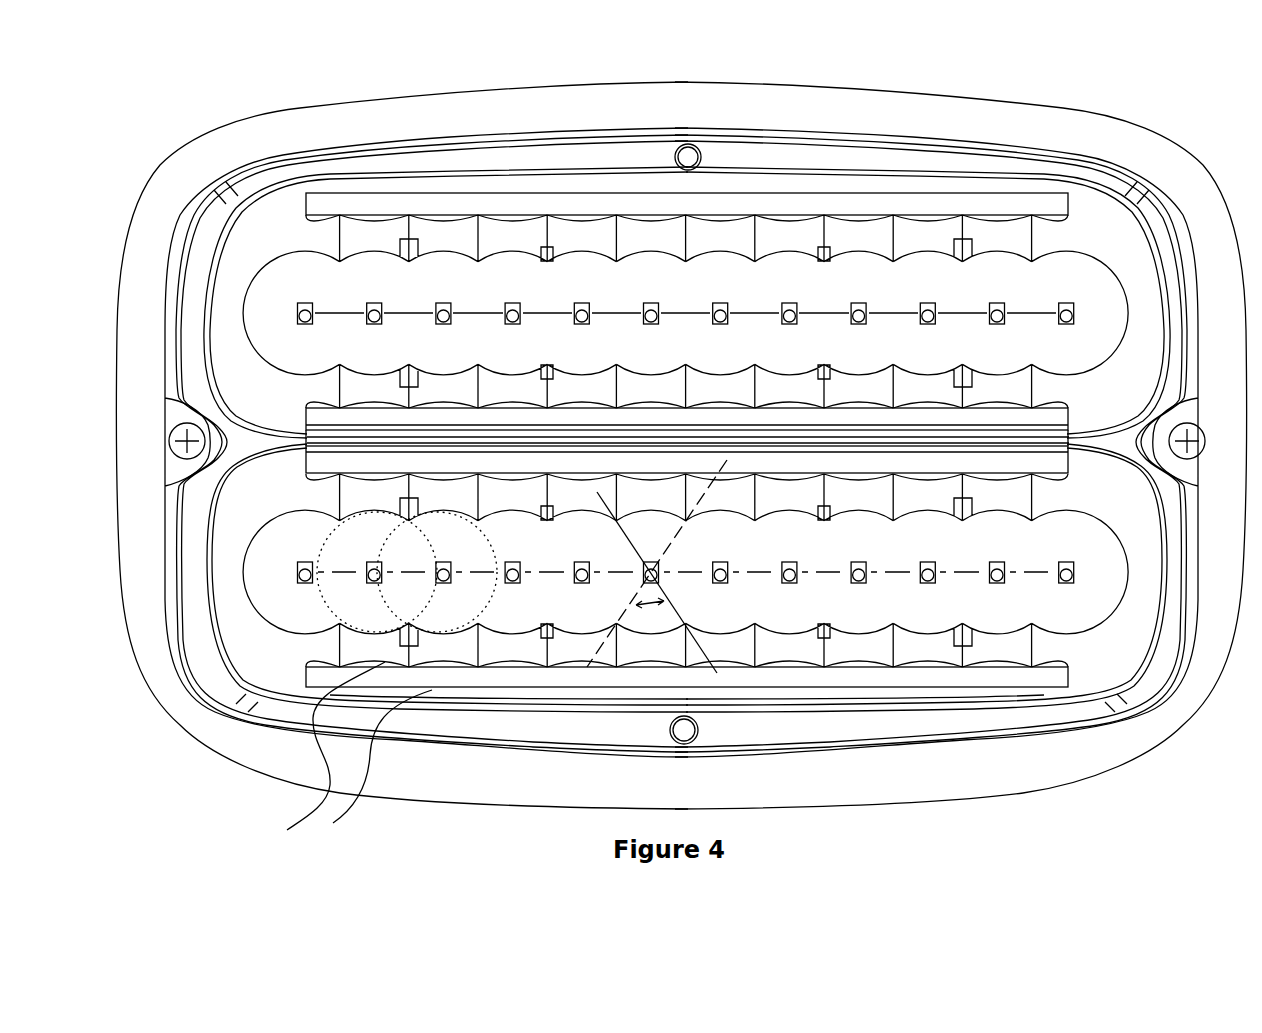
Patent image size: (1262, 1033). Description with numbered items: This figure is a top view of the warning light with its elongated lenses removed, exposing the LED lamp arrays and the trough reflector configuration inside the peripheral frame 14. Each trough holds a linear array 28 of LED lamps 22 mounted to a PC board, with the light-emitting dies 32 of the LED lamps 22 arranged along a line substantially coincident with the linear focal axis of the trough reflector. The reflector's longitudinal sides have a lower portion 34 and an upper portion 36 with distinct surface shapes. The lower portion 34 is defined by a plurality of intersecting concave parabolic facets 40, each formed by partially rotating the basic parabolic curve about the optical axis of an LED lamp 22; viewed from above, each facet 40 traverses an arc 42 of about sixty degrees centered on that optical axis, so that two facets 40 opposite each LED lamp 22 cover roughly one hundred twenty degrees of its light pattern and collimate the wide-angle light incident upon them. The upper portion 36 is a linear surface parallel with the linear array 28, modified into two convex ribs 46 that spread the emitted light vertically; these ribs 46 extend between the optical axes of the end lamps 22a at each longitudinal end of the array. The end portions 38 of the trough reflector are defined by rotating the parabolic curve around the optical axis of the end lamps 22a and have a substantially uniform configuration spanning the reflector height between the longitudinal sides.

The peripheral frame 14 is at (442, 795).
The LED lamps 22 is at (377, 324).
The end lamps 22a is at (305, 302).
The linear array 28 is at (1025, 314).
The dies 32 is at (513, 560).
The lower portion 34 is at (505, 233).
The upper portion 36 is at (553, 200).
The end portions 38 is at (282, 245).
The concave parabolic facets 40 is at (661, 249).
The arc 42 is at (653, 606).
The convex ribs 46 is at (340, 763).